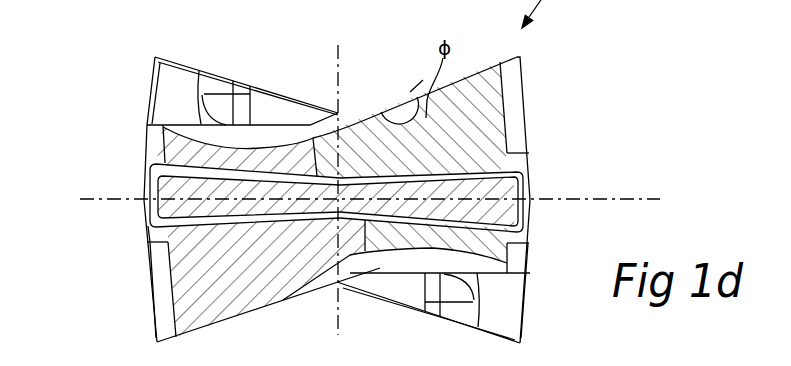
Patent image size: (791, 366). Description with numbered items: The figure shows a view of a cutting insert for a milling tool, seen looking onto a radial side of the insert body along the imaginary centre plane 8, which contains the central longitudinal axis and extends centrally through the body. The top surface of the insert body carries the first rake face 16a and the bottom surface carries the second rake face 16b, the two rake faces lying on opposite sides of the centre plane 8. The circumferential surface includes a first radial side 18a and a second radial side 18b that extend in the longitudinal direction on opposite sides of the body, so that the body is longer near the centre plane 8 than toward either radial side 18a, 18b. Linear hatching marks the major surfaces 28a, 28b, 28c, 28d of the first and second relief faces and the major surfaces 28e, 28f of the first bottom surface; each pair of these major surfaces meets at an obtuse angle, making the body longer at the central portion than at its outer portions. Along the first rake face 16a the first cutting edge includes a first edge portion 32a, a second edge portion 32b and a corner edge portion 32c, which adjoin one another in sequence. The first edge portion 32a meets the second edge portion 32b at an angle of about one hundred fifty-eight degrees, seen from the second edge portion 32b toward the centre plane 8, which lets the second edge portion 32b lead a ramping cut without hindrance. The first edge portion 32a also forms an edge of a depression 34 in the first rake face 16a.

The centre plane 8 is at (592, 199).
The first rake face 16a is at (253, 62).
The second rake face 16b is at (307, 310).
The first radial side 18a is at (575, 156).
The second radial side 18b is at (118, 160).
The major surface 28a is at (467, 112).
The major surface 28b is at (180, 148).
The major surface 28c is at (198, 273).
The major surface 28d is at (493, 248).
The major surface 28e is at (512, 202).
The major surface 28f is at (165, 205).
The first edge portion 32a is at (351, 118).
The second edge portion 32b is at (477, 67).
The corner edge portion 32c is at (521, 56).
The depression 34 is at (279, 120).